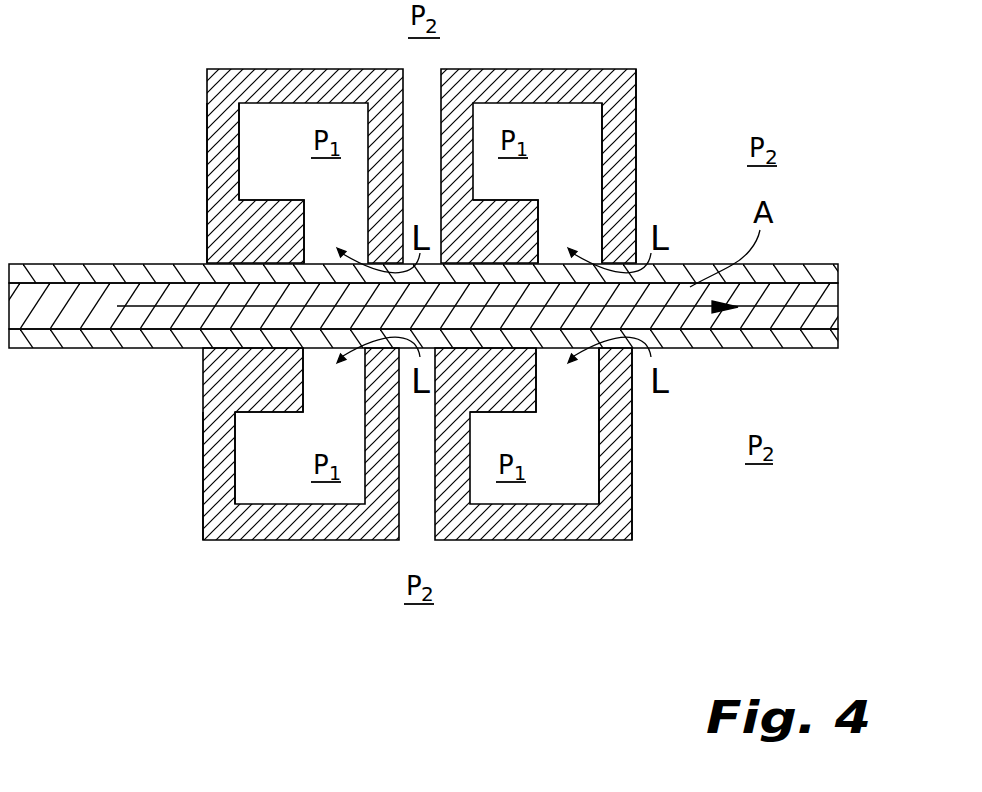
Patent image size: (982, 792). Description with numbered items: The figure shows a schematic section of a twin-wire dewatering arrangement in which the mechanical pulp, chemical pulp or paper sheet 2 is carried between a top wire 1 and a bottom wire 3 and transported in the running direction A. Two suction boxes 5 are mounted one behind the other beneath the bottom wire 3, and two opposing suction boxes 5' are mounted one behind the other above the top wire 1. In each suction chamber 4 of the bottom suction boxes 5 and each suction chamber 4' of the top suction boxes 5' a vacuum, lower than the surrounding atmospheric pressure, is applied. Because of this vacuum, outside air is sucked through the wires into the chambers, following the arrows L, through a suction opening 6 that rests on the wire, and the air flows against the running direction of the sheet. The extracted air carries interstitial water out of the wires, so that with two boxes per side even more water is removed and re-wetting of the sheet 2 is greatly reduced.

The top wire 1 is at (820, 272).
The mechanical pulp, chemical pulp or paper sheet 2 is at (820, 306).
The bottom wire 3 is at (820, 340).
The suction chamber 4 is at (414, 444).
The suction chamber 4' is at (418, 166).
The suction box 5 is at (414, 444).
The suction box 5' is at (418, 166).
The suction opening 6 is at (335, 232).